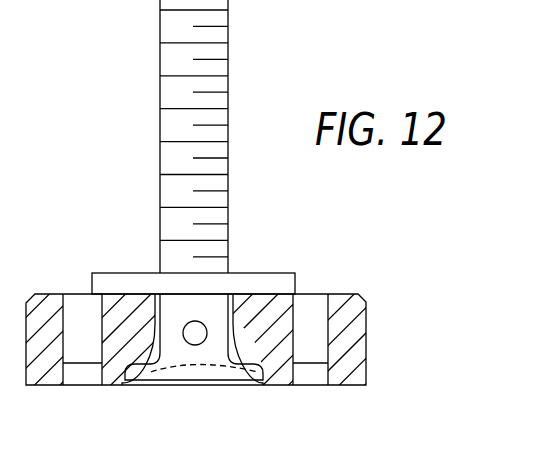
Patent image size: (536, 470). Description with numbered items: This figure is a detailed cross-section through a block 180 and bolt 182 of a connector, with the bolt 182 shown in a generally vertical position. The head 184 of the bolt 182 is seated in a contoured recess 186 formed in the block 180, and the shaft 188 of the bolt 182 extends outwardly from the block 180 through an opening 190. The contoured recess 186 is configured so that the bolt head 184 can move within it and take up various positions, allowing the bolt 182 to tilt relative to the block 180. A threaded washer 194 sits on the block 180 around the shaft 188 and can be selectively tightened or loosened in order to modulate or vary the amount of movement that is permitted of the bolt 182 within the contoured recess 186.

The block 180 is at (357, 357).
The bolt 182 is at (229, 201).
The head 184 is at (238, 375).
The contoured recess 186 is at (143, 350).
The shaft 188 is at (155, 59).
The opening 190 is at (158, 320).
The threaded washer 194 is at (278, 282).